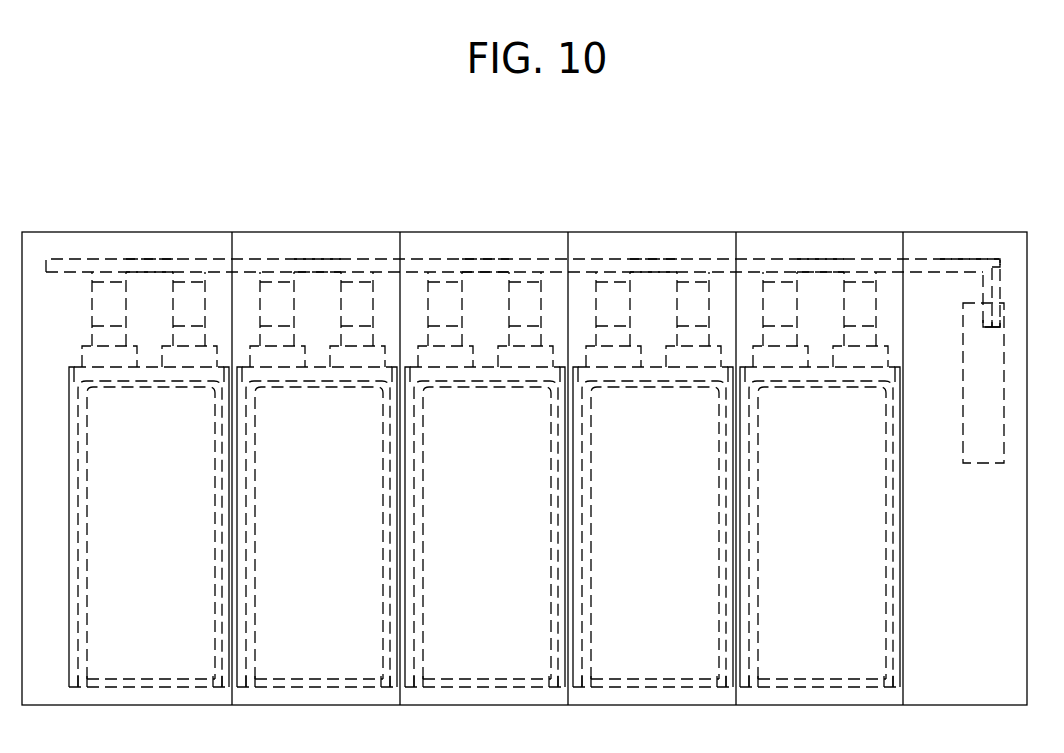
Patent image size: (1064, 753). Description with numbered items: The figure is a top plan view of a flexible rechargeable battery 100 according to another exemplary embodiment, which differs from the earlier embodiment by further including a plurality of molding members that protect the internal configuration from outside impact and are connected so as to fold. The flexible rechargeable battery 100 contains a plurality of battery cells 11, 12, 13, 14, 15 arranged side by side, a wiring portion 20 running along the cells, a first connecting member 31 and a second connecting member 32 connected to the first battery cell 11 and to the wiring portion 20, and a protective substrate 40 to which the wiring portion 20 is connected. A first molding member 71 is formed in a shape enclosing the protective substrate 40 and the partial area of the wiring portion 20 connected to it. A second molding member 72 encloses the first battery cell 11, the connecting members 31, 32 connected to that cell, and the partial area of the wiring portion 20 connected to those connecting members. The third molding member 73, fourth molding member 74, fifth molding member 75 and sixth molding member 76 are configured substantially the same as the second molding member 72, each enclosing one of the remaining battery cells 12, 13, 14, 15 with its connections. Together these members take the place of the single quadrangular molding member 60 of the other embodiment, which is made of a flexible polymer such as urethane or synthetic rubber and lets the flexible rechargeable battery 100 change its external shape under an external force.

The flexible rechargeable battery 100 is at (1016, 220).
The molding member 60 is at (667, 232).
The first battery cell 11 is at (820, 549).
The battery cell 12 is at (653, 512).
The battery cell 13 is at (485, 512).
The battery cell 14 is at (317, 512).
The battery cell 15 is at (158, 670).
The first connecting member 31 is at (857, 258).
The second connecting member 32 is at (778, 258).
The first molding member 71 is at (987, 250).
The second molding member 72 is at (817, 248).
The third molding member 73 is at (604, 248).
The fourth molding member 74 is at (487, 248).
The fifth molding member 75 is at (320, 248).
The sixth molding member 76 is at (142, 248).
The wiring portion 20 is at (953, 252).
The protective substrate 40 is at (1003, 388).